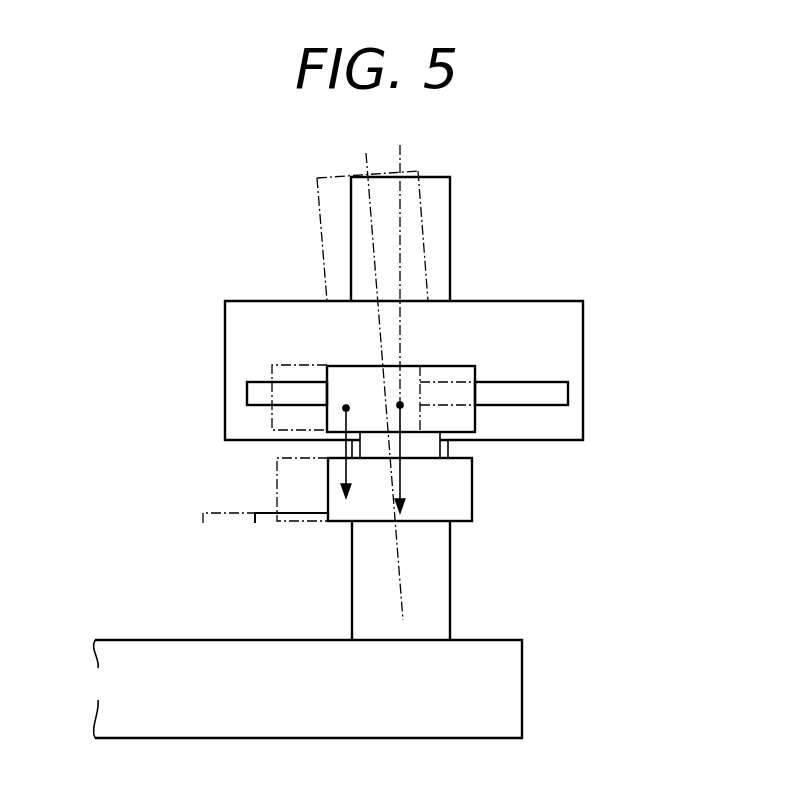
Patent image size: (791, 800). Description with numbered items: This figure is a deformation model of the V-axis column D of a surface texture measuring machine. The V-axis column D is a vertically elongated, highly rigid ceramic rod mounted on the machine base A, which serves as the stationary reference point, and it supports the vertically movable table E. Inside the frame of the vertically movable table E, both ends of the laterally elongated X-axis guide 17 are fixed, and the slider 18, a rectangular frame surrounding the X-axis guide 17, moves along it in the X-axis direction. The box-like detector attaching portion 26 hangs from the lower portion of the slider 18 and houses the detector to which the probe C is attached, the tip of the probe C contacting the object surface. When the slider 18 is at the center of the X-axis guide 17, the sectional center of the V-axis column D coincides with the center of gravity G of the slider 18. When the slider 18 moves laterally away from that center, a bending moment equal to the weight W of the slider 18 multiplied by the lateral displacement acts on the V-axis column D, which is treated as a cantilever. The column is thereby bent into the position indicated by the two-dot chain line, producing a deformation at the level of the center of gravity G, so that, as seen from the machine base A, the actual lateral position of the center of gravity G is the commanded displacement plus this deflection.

The V-axis column D is at (421, 210).
The vertically movable table E is at (278, 305).
The X-axis guide 17 is at (558, 392).
The slider 18 is at (323, 392).
The center of gravity G is at (346, 408).
The detector attaching portion 26 is at (463, 510).
The probe C is at (255, 518).
The weight of the slider W is at (401, 581).
The machine base A is at (510, 663).